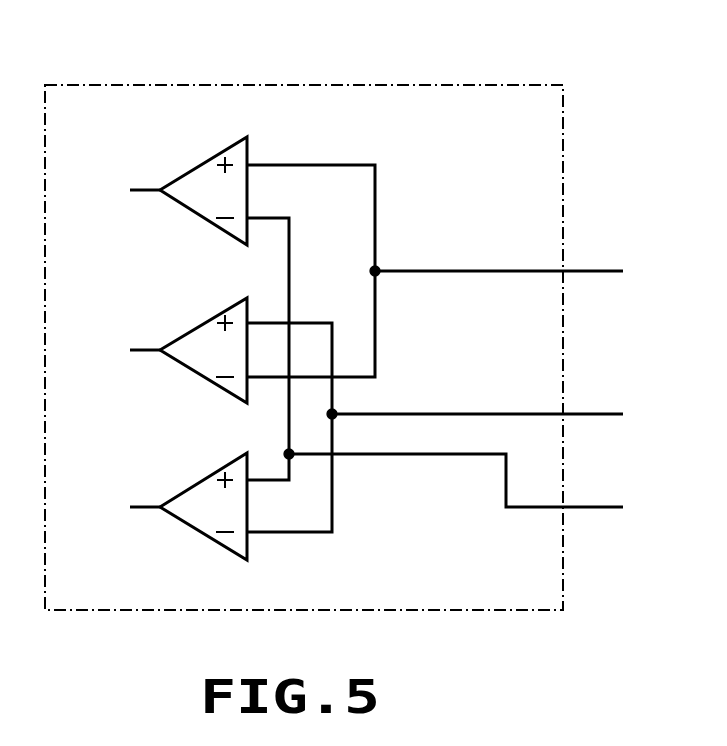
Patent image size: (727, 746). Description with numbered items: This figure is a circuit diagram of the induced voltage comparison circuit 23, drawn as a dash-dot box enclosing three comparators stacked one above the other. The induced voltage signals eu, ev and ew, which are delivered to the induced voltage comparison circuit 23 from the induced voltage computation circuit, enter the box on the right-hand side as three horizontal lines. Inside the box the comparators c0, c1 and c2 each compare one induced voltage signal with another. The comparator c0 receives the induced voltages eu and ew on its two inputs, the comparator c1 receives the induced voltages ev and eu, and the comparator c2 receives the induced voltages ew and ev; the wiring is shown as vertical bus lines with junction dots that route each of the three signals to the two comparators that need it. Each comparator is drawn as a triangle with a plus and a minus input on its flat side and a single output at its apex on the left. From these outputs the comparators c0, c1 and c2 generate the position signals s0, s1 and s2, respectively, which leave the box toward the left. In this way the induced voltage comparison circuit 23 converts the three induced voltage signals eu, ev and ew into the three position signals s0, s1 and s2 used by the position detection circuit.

The induced voltage comparison circuit 23 is at (311, 83).
The comparator c0 is at (198, 166).
The comparator c1 is at (200, 326).
The comparator c2 is at (210, 476).
The position signal s0 is at (119, 190).
The position signal s1 is at (119, 350).
The position signal s2 is at (119, 507).
The induced voltage signal eu is at (457, 271).
The induced voltage signal ev is at (457, 427).
The induced voltage signal ew is at (458, 370).